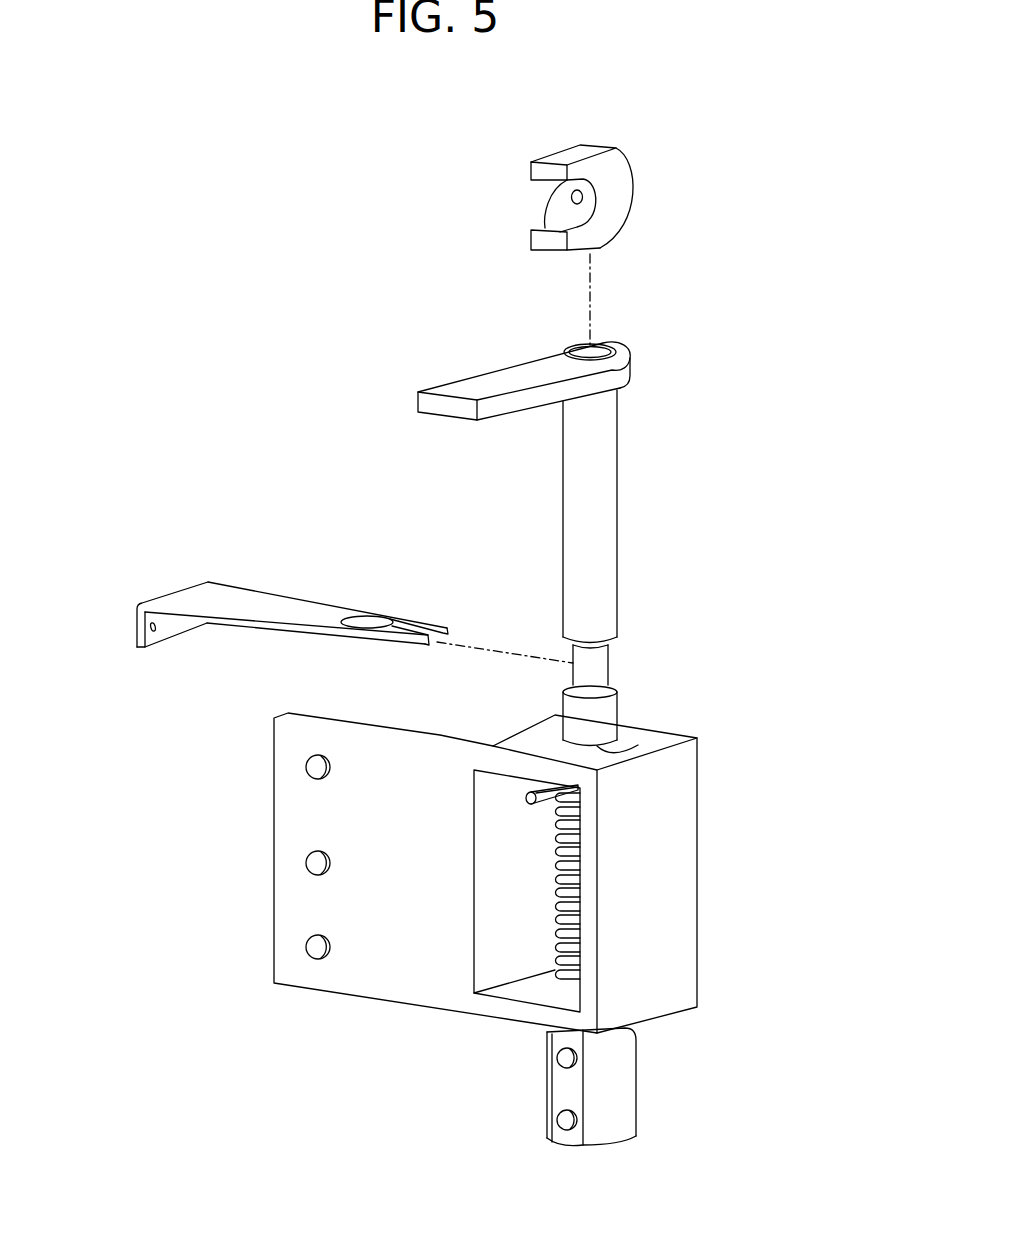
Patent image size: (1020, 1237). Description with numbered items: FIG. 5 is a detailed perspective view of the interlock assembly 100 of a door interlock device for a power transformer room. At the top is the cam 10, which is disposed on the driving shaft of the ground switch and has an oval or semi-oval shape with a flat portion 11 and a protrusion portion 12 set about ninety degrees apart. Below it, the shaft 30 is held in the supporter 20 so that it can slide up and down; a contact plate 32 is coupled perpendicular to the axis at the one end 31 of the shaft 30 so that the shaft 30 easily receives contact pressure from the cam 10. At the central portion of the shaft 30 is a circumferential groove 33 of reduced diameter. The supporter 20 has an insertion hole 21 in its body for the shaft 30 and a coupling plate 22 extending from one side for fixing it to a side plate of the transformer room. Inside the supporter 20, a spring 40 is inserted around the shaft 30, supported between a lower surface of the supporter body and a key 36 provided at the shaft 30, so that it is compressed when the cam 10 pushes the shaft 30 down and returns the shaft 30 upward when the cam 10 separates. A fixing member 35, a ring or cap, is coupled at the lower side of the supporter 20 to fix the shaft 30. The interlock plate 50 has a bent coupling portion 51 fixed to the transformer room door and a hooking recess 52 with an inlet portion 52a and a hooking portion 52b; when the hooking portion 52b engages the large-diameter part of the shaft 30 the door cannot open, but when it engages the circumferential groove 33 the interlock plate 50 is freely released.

The locking device 100 is at (226, 193).
The cam 10 is at (579, 237).
The flat portion 11 is at (548, 246).
The protrusion portion 12 is at (630, 194).
The supporter 20 is at (521, 882).
The insertion hole 21 is at (638, 745).
The coupling plate 22 is at (372, 987).
The shaft 30 is at (554, 516).
The one end 31 is at (600, 350).
The contact plate 32 is at (535, 353).
The circumferential groove 33 is at (603, 661).
The fixing member 35 is at (627, 1103).
The fixing pin 36 is at (530, 793).
The spring 40 is at (560, 933).
The interlock plate 50 is at (323, 578).
The coupling portion 51 is at (140, 633).
The hooking recess 52 is at (394, 577).
The inlet portion 52a is at (419, 628).
The hooking portion 52b is at (443, 544).